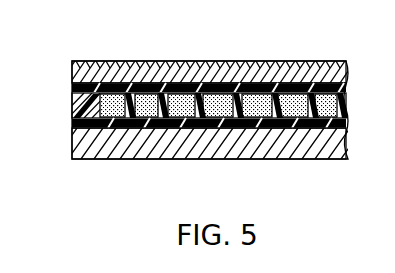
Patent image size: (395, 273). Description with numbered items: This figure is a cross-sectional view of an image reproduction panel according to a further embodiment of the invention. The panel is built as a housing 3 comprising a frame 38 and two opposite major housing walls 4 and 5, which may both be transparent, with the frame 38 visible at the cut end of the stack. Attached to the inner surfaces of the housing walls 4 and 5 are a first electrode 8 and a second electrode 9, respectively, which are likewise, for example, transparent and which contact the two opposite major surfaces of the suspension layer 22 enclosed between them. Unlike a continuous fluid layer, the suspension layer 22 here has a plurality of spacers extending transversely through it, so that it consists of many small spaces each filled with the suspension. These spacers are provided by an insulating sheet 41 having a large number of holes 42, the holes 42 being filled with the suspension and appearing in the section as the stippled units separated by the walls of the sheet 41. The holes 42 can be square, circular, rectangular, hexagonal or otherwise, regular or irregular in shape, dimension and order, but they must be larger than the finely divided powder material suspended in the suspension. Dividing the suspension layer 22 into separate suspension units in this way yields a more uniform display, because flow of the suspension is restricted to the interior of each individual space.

The housing 3 is at (70, 53).
The major housing wall 4 is at (80, 68).
The first electrode 8 is at (72, 87).
The frame 38 is at (77, 105).
The second electrode 9 is at (72, 125).
The major housing wall 5 is at (80, 145).
The suspension layer 22 is at (148, 103).
The holes 42 is at (186, 105).
The insulating sheet 41 is at (241, 112).